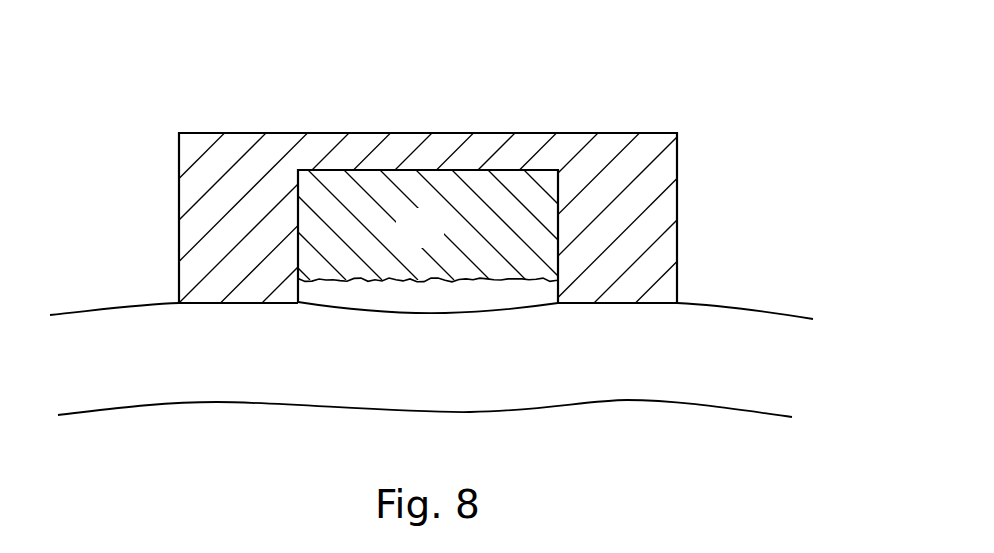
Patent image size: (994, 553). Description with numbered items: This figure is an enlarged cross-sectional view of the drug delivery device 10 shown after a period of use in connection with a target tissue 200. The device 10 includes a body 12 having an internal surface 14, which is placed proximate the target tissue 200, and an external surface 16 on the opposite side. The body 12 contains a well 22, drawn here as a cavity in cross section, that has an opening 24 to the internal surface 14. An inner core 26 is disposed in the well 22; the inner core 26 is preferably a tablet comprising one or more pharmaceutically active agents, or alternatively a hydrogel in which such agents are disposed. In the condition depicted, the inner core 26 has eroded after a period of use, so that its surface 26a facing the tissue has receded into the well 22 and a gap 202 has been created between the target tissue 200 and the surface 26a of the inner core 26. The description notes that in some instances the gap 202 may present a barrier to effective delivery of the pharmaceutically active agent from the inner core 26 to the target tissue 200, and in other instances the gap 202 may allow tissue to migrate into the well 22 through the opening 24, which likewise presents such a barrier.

The drug delivery device 10 is at (565, 66).
The body 12 is at (677, 200).
The internal surface 14 is at (620, 303).
The external surface 16 is at (653, 133).
The well 22 is at (303, 200).
The opening 24 is at (415, 302).
The inner core 26 is at (438, 243).
The surface of inner core 26a is at (345, 282).
The target tissue 200 is at (150, 377).
The gap 202 is at (519, 295).